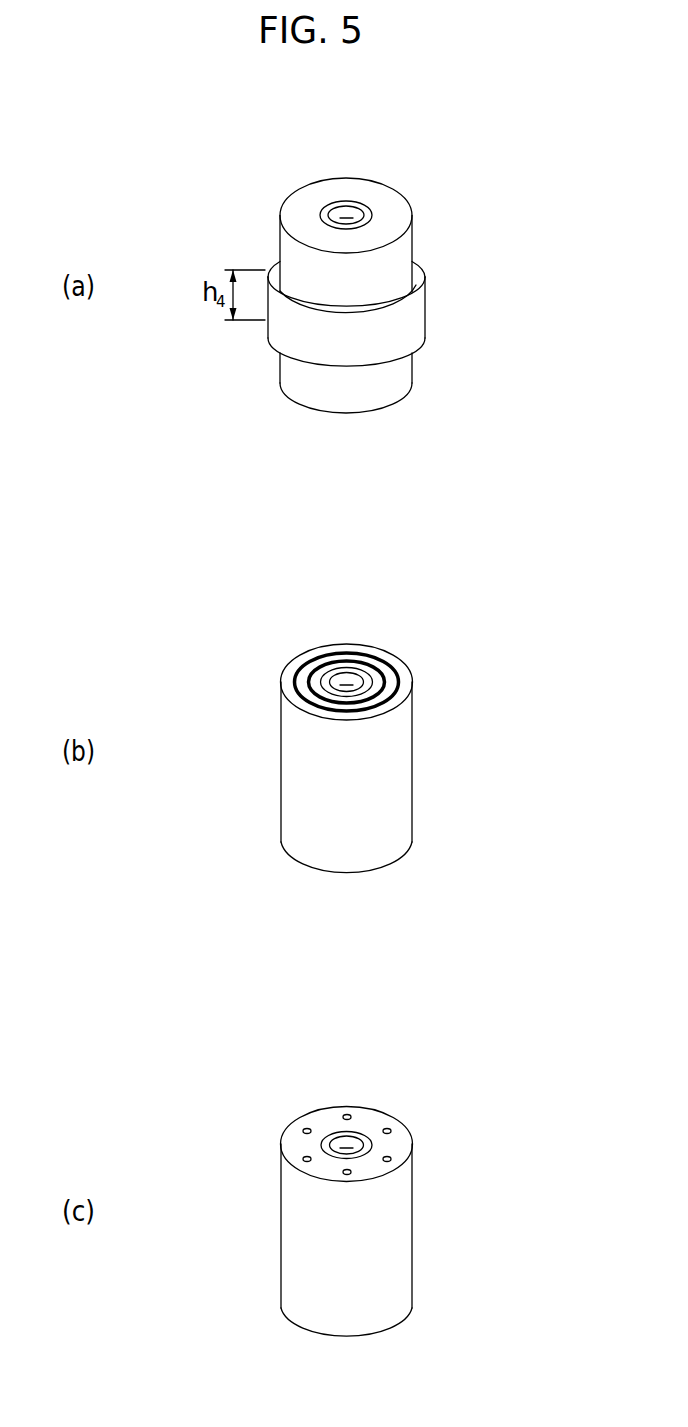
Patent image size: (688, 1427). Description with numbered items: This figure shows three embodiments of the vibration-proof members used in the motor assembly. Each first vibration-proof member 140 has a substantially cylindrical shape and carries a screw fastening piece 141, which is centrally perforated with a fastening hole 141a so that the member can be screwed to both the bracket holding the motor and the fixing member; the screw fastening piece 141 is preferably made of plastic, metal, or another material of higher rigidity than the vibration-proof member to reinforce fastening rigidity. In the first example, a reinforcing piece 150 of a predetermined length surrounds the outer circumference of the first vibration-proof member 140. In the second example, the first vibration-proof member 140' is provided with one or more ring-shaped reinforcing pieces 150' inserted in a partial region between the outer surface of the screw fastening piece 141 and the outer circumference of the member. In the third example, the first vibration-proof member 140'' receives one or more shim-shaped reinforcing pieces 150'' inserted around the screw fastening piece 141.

The first vibration-proof member 140 is at (408, 283).
The first vibration-proof member 140' is at (421, 732).
The first vibration-proof member 140'' is at (421, 1199).
The screw fastening piece 141 is at (327, 207).
The fastening hole 141a is at (349, 217).
The reinforcing piece 150 is at (385, 314).
The reinforcing piece 150' is at (390, 651).
The reinforcing piece 150'' is at (397, 1118).